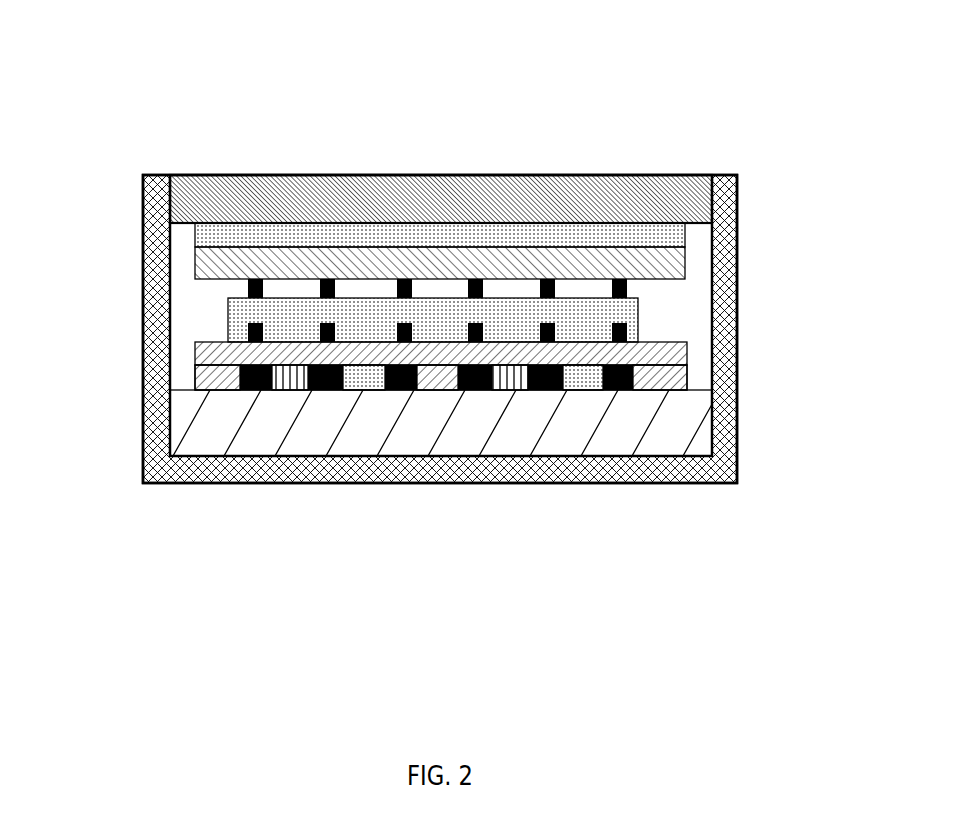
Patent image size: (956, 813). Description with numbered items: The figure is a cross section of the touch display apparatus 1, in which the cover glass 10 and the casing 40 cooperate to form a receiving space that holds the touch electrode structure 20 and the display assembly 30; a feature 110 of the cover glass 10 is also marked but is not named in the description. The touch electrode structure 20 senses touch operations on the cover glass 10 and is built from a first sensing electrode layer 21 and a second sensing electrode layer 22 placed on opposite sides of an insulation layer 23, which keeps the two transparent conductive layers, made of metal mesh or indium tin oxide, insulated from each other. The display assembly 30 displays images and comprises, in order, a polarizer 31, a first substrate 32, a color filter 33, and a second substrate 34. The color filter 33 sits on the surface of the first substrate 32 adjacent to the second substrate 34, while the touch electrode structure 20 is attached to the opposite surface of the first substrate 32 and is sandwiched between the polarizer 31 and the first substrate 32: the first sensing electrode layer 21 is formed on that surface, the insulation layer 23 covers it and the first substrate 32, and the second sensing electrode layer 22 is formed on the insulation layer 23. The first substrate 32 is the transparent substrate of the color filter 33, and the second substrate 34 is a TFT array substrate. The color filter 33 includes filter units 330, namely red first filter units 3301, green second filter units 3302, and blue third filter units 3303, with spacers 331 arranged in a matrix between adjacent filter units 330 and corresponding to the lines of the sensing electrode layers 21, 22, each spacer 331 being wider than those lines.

The touch display apparatus 1 is at (380, 78).
The cover glass 10 is at (552, 175).
The inner surface of cover plate 110 is at (685, 235).
The casing 40 is at (147, 176).
The touch electrode structure 20 is at (360, 297).
The second sensing electrode layer 22 is at (255, 277).
The first sensing electrode layer 21 is at (238, 340).
The insulation layer 23 is at (357, 329).
The display assembly 30 is at (510, 454).
The polarizer 31 is at (683, 273).
The first substrate 32 is at (690, 341).
The color filter 33 is at (497, 512).
The filter units 330 is at (441, 484).
The first filter unit 3301 is at (220, 390).
The second filter unit 3302 is at (293, 390).
The third filter unit 3303 is at (368, 390).
The spacers 331 is at (616, 392).
The second substrate 34 is at (484, 423).